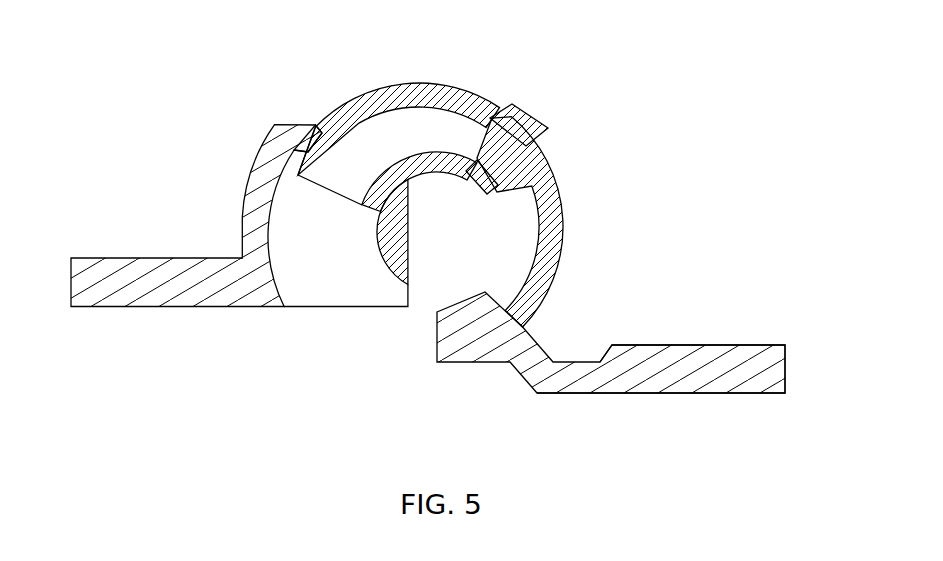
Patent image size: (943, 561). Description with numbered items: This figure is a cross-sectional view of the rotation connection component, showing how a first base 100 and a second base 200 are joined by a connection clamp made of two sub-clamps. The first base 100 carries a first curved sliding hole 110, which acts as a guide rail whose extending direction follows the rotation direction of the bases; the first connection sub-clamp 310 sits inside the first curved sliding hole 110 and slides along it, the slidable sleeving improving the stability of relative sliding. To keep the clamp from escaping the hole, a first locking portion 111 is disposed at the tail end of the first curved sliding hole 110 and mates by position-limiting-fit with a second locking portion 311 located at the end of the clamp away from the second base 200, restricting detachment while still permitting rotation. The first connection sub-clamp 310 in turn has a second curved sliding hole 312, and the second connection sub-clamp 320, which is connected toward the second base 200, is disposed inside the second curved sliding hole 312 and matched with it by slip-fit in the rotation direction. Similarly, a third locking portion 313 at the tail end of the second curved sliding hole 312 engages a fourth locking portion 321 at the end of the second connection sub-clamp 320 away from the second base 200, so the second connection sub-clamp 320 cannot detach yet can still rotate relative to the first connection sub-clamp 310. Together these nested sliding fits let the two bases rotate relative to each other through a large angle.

The first base 100 is at (132, 280).
The first curved sliding hole 110 is at (357, 278).
The first locking portion 111 is at (305, 131).
The second base 200 is at (772, 367).
The first connection sub-clamp 310 is at (404, 82).
The second locking portion 311 is at (301, 153).
The second curved sliding hole 312 is at (439, 127).
The third locking portion 313 is at (498, 176).
The second connection sub-clamp 320 is at (533, 292).
The fourth locking portion 321 is at (508, 124).